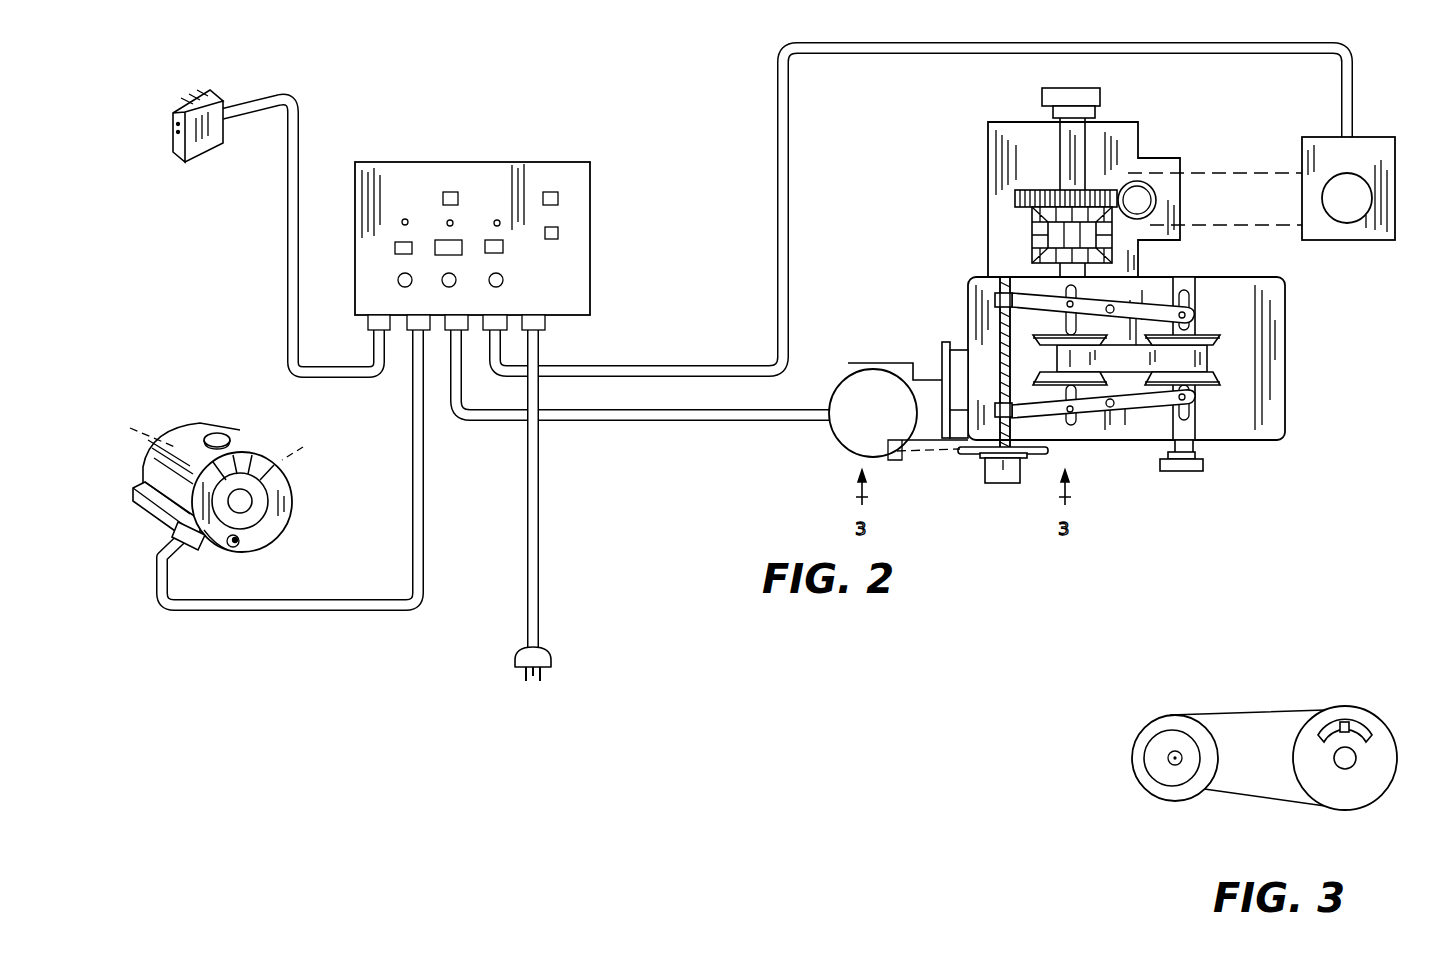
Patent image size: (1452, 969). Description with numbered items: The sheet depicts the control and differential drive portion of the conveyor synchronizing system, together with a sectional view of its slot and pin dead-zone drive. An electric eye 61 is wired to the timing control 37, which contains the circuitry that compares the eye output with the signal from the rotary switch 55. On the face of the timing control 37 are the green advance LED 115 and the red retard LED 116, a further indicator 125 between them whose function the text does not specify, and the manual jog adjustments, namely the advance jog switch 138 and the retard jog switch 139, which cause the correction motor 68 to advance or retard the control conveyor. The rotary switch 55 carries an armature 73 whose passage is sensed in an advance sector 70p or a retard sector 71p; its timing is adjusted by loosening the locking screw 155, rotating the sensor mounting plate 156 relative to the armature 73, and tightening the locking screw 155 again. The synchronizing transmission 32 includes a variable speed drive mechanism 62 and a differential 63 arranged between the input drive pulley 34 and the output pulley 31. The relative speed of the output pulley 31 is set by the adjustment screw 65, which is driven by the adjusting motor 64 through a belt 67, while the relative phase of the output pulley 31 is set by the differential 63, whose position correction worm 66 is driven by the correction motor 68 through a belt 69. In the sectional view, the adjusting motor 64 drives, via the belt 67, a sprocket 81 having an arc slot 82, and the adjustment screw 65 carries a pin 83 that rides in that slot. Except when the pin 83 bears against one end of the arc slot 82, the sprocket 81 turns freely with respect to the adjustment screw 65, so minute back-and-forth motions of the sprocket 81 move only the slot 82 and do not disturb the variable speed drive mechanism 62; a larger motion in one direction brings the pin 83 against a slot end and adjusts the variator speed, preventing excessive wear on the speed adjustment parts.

In FIG. 2, the electric eye 61 is at (217, 144).
In FIG. 2, the timing control 37 is at (545, 170).
In FIG. 2, the green advance LED 115 is at (405, 219).
In FIG. 2, the indicator light 125 is at (451, 220).
In FIG. 2, the red retard LED 116 is at (497, 220).
In FIG. 2, the advance jog switch 138 is at (395, 254).
In FIG. 2, the retard jog switch 139 is at (504, 248).
In FIG. 2, the rotary switch 55 is at (215, 425).
In FIG. 2, the advance sector 70p is at (133, 429).
In FIG. 2, the locking screw 155 is at (227, 438).
In FIG. 2, the armature 73 is at (241, 468).
In FIG. 2, the retard sector 71p is at (309, 443).
In FIG. 2, the sensor mounting plate 156 is at (284, 480).
In FIG. 2, the output pulley 31 is at (1100, 100).
In FIG. 2, the differential 63 is at (1018, 192).
In FIG. 2, the position correction worm 66 is at (1148, 186).
In FIG. 2, the belt 69 is at (1243, 232).
In FIG. 2, the correction motor 68 is at (1310, 137).
In FIG. 2, the variable speed drive mechanism 62 is at (1126, 430).
In FIG. 2, the adjusting motor 64 is at (838, 440).
In FIG. 3, the adjusting motor 64 is at (1140, 735).
In FIG. 2, the synchronizing transmission 32 is at (1310, 388).
In FIG. 2, the adjustment screw 65 is at (1000, 320).
In FIG. 2, the sprocket 81 is at (970, 458).
In FIG. 3, the sprocket 81 is at (1386, 763).
In FIG. 2, the belt 67 is at (945, 462).
In FIG. 3, the belt 67 is at (1238, 715).
In FIG. 2, the input drive pulley 34 is at (1203, 469).
In FIG. 3, the arc slot 82 is at (1372, 728).
In FIG. 3, the pin 83 is at (1343, 722).